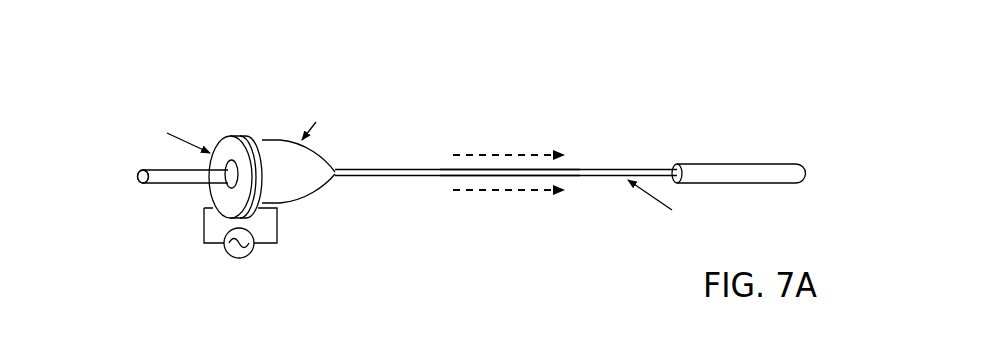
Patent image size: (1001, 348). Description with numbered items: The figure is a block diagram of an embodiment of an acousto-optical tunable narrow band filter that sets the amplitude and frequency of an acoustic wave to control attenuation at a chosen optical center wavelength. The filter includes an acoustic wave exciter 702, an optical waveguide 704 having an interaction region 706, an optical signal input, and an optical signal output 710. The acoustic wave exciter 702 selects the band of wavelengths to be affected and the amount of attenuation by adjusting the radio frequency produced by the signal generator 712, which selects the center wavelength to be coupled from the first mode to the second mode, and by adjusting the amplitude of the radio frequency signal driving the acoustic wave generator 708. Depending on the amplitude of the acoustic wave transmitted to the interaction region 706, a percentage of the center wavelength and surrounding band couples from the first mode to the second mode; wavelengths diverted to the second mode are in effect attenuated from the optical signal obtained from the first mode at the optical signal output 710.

The acoustic wave exciter 702 is at (207, 31).
The optical waveguide 704 is at (165, 187).
The interaction region 706 is at (495, 152).
The acoustic wave generator 708 is at (126, 175).
The optical signal output 710 is at (770, 158).
The signal generator 712 is at (192, 267).